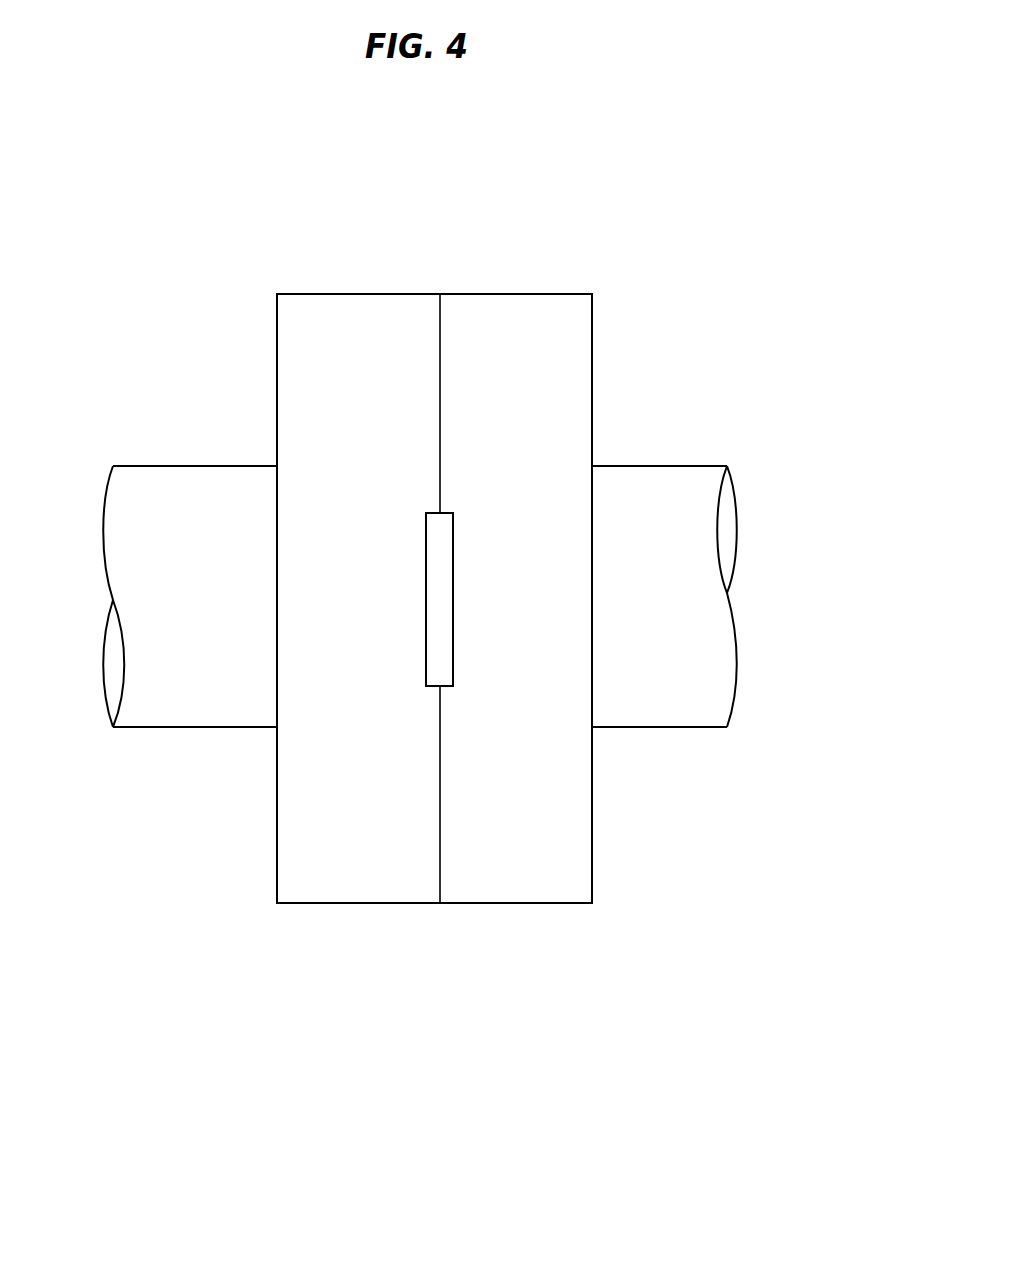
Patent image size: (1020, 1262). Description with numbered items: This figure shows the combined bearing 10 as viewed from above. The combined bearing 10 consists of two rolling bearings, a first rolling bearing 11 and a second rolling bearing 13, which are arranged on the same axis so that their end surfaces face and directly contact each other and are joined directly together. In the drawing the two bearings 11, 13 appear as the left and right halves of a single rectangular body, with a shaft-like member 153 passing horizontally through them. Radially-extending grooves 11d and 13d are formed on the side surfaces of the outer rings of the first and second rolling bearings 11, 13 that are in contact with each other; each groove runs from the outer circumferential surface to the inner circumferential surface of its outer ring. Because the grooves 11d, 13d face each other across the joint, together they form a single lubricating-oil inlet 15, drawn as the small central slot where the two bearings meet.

The combined bearing 10 is at (641, 255).
The first rolling bearing 11 is at (340, 906).
The second rolling bearing 13 is at (522, 906).
The shaft 153 is at (158, 732).
The lubricating-oil inlet 15 is at (440, 593).
The groove 11d is at (426, 535).
The groove 13d is at (453, 535).